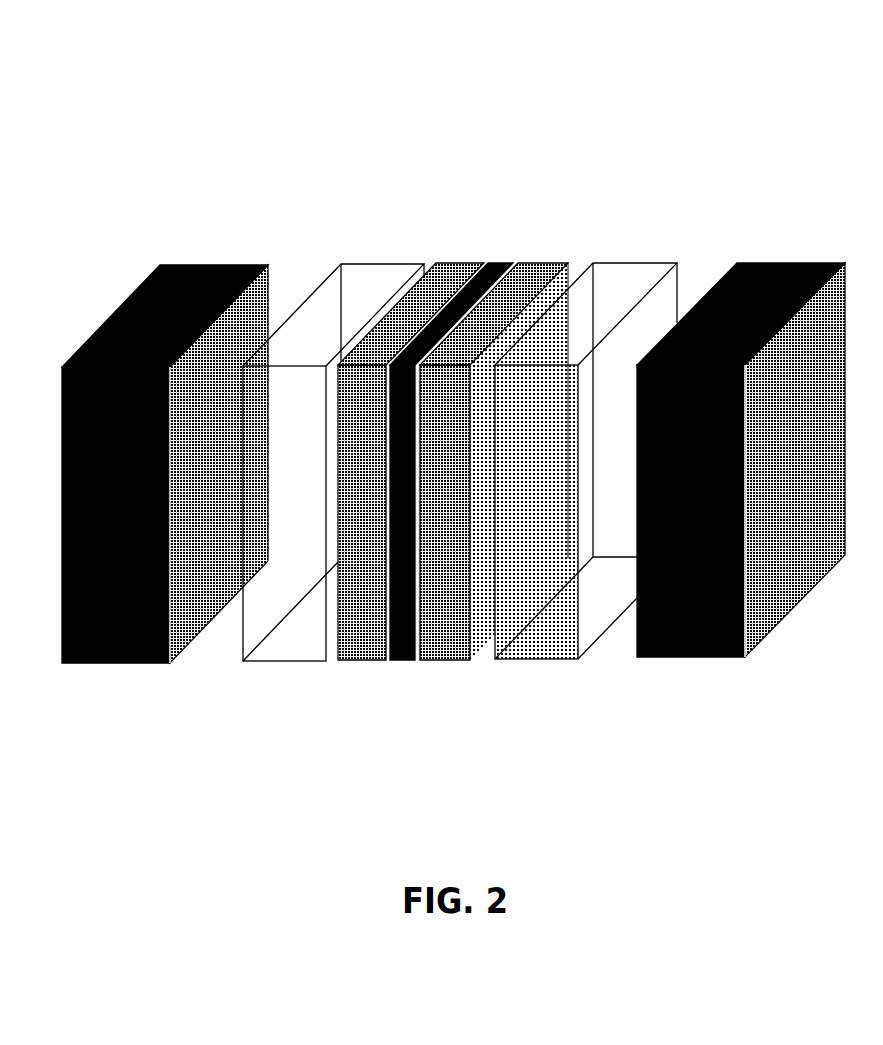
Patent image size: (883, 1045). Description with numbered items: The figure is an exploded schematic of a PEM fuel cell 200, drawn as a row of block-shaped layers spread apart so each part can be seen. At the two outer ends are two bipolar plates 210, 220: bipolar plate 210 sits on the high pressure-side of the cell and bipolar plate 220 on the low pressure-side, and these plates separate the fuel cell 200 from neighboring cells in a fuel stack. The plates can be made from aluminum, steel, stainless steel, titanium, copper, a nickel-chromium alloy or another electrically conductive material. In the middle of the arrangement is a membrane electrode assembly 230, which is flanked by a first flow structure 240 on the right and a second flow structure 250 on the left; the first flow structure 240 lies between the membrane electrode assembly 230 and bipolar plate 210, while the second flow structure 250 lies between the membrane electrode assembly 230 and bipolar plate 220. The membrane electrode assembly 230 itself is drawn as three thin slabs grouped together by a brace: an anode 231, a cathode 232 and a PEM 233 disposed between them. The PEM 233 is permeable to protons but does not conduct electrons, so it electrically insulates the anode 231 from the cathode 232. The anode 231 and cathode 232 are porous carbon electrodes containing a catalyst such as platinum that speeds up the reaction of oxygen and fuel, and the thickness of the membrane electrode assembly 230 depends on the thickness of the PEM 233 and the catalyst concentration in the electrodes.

The PEM fuel cell 200 is at (693, 146).
The bipolar plate 210 is at (701, 674).
The bipolar plate 220 is at (116, 678).
The membrane electrode assembly 230 is at (472, 468).
The anode 231 is at (455, 251).
The cathode 232 is at (538, 251).
The PEM 233 is at (499, 250).
The first flow structure 240 is at (535, 675).
The second flow structure 250 is at (290, 675).